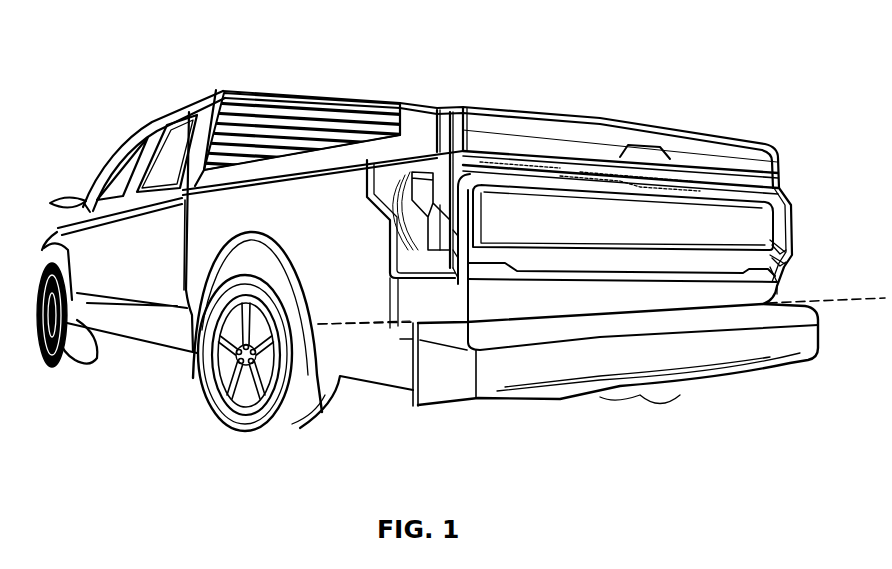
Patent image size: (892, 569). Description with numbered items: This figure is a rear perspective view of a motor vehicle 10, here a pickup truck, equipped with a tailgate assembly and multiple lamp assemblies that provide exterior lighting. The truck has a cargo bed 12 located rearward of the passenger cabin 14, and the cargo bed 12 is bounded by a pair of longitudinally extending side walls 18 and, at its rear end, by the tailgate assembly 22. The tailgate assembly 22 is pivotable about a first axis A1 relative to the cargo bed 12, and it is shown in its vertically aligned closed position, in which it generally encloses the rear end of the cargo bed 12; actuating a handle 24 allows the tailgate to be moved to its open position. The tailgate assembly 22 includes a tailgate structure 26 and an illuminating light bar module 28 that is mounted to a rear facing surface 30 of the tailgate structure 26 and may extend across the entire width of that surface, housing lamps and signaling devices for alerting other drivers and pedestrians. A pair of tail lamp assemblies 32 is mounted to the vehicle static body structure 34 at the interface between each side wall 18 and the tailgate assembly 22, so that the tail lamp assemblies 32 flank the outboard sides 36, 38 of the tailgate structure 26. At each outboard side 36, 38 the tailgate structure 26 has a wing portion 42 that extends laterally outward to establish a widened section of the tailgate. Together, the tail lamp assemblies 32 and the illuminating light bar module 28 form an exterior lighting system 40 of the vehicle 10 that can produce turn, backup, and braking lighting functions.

The motor vehicle 10 is at (100, 70).
The cargo bed 12 is at (626, 101).
The passenger cabin 14 is at (307, 95).
The side walls 18 is at (413, 127).
The tailgate assembly 22 is at (570, 228).
The handle 24 is at (648, 148).
The tailgate structure 26 is at (600, 262).
The illuminating light bar module 28 is at (522, 159).
The rear facing surface 30 is at (648, 230).
The tail lamp assemblies 32 is at (376, 223).
The vehicle static body structure 34 is at (188, 318).
The outboard side 36 is at (457, 226).
The outboard side 38 is at (788, 273).
The exterior lighting system 40 is at (480, 130).
The wing portion 42 is at (463, 219).
The first axis A1 is at (297, 428).